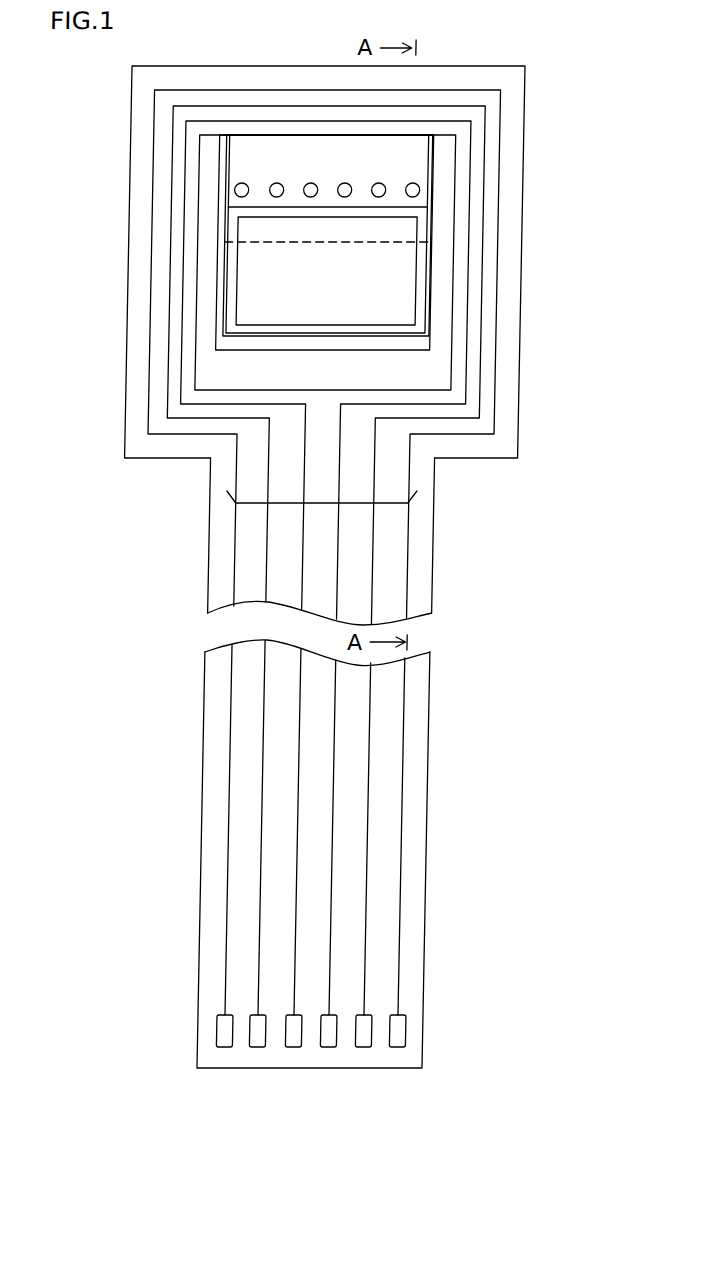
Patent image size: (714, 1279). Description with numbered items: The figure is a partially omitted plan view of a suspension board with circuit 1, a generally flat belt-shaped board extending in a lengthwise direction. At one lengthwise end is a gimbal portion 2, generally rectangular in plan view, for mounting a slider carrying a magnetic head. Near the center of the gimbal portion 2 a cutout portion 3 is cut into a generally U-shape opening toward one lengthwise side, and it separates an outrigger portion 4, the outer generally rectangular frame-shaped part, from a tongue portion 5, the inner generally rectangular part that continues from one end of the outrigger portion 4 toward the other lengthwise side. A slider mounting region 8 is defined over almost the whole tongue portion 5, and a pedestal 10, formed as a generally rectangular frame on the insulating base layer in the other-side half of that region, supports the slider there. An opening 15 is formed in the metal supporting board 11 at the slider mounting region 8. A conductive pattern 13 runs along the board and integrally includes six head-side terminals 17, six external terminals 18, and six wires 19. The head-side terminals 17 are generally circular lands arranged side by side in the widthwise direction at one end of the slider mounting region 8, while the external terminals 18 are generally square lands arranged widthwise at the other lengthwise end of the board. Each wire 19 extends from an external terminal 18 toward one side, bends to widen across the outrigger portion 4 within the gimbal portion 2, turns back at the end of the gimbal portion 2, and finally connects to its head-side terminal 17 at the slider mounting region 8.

The suspension board with circuit 1 is at (339, 1150).
The gimbal portion 2 is at (539, 237).
The cutout portion 3 is at (456, 180).
The outrigger portion 4 is at (523, 198).
The tongue portion 5 is at (232, 228).
The slider mounting region 8 is at (436, 280).
The pedestal 10 is at (434, 305).
The metal supporting board 11 is at (442, 475).
The conductive pattern 13 is at (261, 566).
The opening 15 is at (404, 241).
The head-side terminals 17 is at (415, 183).
The external terminals 18 is at (243, 1047).
The wires 19 is at (333, 504).